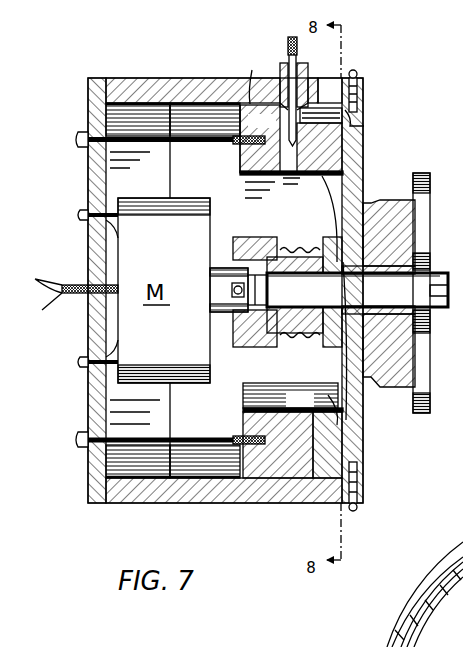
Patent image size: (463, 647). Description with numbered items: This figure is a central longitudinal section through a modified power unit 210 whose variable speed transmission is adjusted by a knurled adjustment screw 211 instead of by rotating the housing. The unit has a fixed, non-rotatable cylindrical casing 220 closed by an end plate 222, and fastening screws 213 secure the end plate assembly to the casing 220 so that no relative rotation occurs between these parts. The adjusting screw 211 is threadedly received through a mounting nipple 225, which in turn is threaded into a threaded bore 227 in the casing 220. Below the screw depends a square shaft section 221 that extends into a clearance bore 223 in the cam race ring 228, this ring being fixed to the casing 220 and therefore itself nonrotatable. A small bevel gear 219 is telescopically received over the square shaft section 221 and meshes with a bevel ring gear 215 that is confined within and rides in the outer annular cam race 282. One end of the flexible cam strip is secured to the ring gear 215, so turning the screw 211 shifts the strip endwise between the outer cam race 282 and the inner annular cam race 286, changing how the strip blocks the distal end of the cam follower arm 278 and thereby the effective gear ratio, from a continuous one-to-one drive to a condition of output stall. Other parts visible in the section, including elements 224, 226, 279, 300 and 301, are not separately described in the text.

The power unit 210 is at (244, 44).
The knurled adjustment screw 211 is at (293, 36).
The fastening screws 213 is at (356, 76).
The bevel ring gear 215 is at (364, 128).
The small bevel gear 219 is at (291, 139).
The cylindrical casing 220 is at (193, 78).
The square shaft section 221 is at (277, 184).
The end plate 222 is at (88, 100).
The clearance bore 223 is at (295, 178).
The end wall 224 is at (365, 172).
The mounting nipple 225 is at (301, 68).
The stator winding 226 is at (183, 432).
The threaded bore 227 is at (283, 72).
The cam race ring 228 is at (240, 166).
The cam follower arm 278 is at (318, 257).
The wire 279 is at (352, 424).
The outer annular cam race 282 is at (250, 79).
The inner annular cam race 286 is at (330, 416).
The terminal 300 is at (84, 213).
The lead wire 301 is at (100, 242).